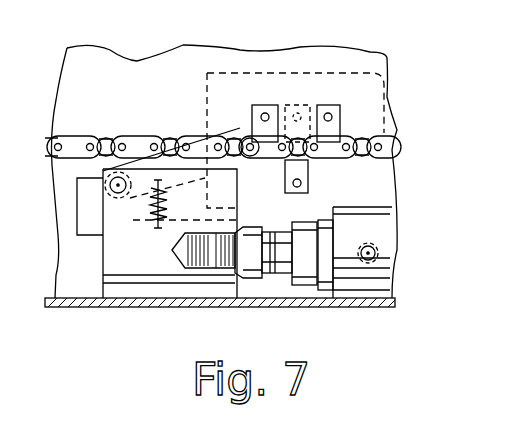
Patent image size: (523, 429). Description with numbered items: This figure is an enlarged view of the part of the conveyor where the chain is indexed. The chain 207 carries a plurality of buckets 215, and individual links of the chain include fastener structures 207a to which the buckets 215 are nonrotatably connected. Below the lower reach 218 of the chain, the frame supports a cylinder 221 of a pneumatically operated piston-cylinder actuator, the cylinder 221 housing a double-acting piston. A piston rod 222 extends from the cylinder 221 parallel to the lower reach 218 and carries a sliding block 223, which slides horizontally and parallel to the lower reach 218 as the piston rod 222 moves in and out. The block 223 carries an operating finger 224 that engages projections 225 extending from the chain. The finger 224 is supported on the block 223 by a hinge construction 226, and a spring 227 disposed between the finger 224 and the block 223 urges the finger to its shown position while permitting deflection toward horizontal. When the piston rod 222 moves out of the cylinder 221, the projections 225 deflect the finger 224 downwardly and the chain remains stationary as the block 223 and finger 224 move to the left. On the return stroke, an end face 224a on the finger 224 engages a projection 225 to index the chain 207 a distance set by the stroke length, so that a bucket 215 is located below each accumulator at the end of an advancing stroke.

The chain 207 is at (365, 137).
The fastener structures 207a is at (297, 97).
The bucket 215 is at (380, 88).
The lower reach 218 is at (112, 136).
The cylinder 221 is at (373, 290).
The piston rod 222 is at (285, 270).
The sliding block 223 is at (158, 263).
The operating finger 224 is at (205, 143).
The end face 224a is at (244, 162).
The projections 225 is at (248, 145).
The hinge construction 226 is at (112, 192).
The spring 227 is at (156, 190).